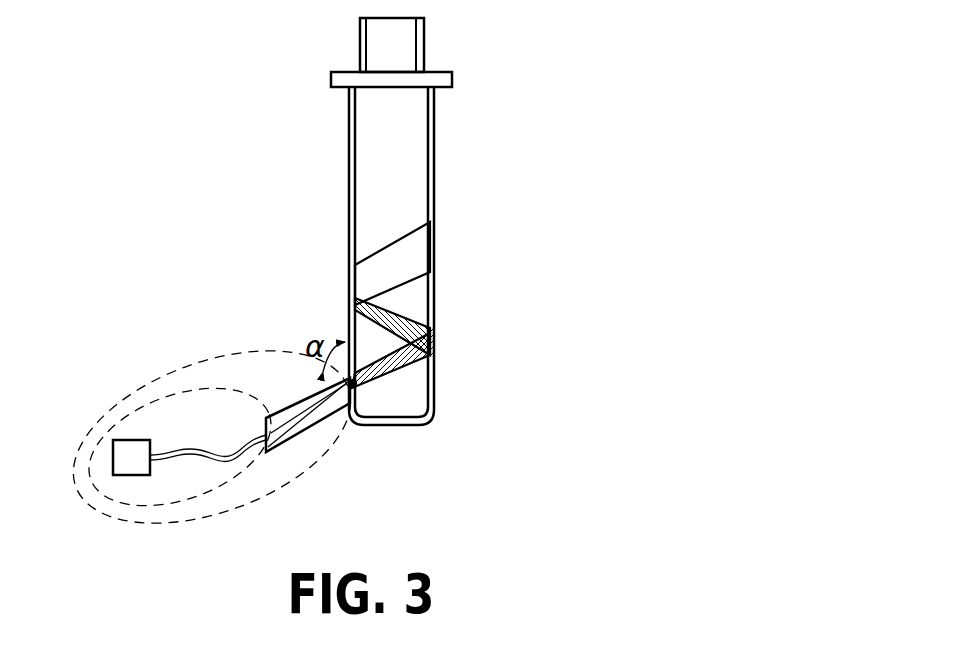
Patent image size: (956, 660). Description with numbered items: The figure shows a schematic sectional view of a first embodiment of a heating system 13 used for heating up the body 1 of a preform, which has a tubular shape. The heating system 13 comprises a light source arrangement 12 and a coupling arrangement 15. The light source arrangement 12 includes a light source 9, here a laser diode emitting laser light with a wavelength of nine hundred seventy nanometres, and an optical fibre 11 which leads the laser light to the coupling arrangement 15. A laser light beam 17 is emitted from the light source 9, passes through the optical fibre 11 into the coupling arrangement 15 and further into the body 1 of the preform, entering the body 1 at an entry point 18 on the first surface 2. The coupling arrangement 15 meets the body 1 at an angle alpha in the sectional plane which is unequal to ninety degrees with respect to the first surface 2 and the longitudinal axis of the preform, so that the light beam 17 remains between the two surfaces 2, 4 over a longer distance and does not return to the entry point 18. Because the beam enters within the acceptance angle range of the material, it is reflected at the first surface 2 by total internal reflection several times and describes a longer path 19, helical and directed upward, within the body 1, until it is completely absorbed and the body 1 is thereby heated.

The body 1 is at (429, 339).
The first surface 2 is at (392, 256).
The second surface 4 is at (357, 162).
The light source 9 is at (125, 447).
The optical fibre 11 is at (218, 455).
The light source arrangement 12 is at (165, 392).
The heating system 13 is at (238, 352).
The coupling arrangement 15 is at (310, 387).
The laser light beam 17 is at (424, 380).
The entry point 18 is at (357, 393).
The longer path 19 is at (433, 343).